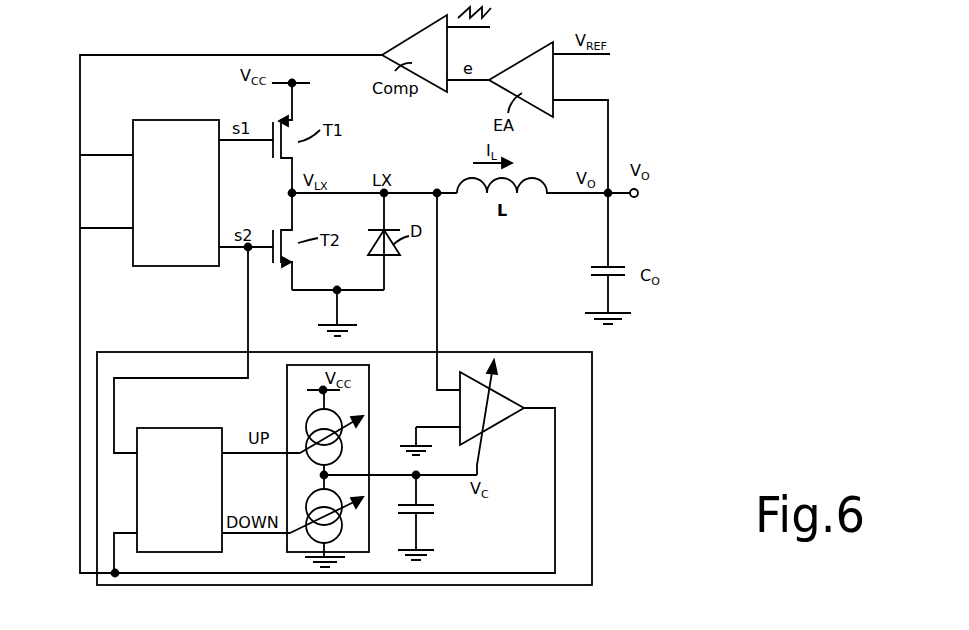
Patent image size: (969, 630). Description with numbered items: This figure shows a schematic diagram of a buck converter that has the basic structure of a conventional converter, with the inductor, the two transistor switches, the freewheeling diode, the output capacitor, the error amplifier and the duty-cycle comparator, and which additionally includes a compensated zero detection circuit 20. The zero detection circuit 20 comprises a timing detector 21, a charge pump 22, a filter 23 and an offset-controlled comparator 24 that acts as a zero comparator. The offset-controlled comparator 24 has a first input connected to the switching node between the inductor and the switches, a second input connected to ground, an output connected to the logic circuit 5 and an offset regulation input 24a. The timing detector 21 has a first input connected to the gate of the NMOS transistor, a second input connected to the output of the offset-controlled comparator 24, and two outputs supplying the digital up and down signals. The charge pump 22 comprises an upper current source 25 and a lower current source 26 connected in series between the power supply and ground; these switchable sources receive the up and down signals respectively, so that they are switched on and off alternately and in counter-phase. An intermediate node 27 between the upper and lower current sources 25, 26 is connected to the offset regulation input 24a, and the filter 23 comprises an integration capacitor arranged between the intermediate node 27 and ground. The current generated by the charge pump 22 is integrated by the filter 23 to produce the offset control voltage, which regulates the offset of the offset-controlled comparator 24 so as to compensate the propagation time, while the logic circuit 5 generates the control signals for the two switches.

The logic circuit 5 is at (170, 132).
The compensated zero detection circuit 20 is at (583, 393).
The timing detector 21 is at (142, 475).
The charge pump 22 is at (370, 376).
The filter 23 is at (425, 512).
The offset-controlled comparator 24 is at (497, 392).
The offset regulation input 24a is at (480, 435).
The upper current source 25 is at (307, 415).
The lower current source 26 is at (343, 526).
The intermediate node 27 is at (330, 474).